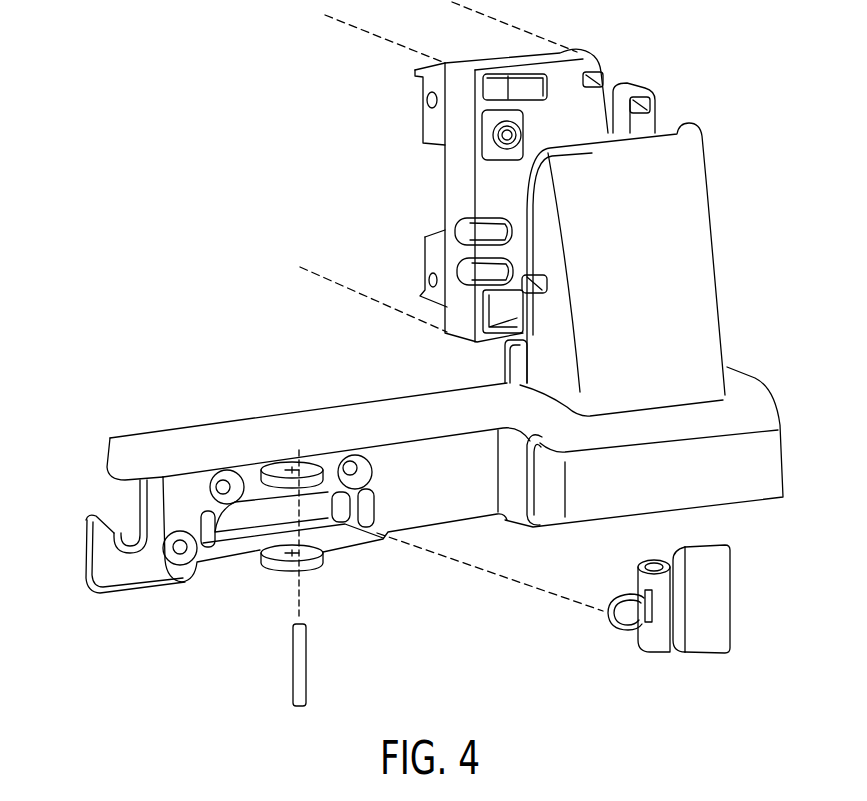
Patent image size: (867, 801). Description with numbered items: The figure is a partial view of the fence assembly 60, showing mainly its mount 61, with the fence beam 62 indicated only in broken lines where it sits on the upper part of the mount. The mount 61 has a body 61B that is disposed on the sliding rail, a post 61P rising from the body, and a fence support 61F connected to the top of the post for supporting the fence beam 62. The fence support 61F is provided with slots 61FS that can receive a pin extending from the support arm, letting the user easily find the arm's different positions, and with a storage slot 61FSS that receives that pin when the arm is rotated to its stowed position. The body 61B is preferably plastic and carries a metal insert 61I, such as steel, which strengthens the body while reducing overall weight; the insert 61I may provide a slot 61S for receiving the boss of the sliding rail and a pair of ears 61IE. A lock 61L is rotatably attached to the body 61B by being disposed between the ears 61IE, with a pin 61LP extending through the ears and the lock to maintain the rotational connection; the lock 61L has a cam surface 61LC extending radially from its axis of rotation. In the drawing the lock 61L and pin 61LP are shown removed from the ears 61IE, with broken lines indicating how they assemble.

The fence assembly 60 is at (716, 124).
The mount 61 is at (770, 470).
The body 61B is at (284, 432).
The fence support 61F is at (514, 205).
The slots 61FS is at (463, 268).
The storage slot 61FSS is at (616, 132).
The post 61P is at (727, 279).
The insert 61I is at (112, 487).
The slot 61S is at (108, 527).
The ears 61IE is at (277, 562).
The pin 61LP is at (298, 685).
The lock 61L is at (682, 609).
The cam surface 61LC is at (612, 620).
The fence beam 62 is at (508, 24).